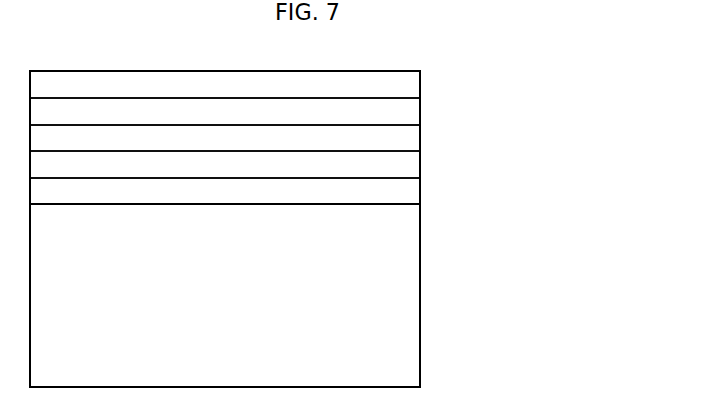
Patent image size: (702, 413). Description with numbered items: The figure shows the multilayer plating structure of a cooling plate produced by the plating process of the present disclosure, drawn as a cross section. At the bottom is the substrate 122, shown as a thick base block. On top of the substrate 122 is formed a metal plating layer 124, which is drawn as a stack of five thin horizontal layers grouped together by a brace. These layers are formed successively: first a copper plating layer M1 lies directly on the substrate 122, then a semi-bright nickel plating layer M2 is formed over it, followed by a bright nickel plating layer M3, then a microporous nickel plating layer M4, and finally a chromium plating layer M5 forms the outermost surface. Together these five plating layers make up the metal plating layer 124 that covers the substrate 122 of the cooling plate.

The substrate 122 is at (421, 250).
The metal plating layer 124 is at (309, 137).
The copper plating layer M1 is at (248, 191).
The semi-bright nickel plating layer M2 is at (421, 165).
The bright nickel plating layer M3 is at (421, 138).
The microporous nickel plating layer M4 is at (421, 112).
The chromium plating layer M5 is at (421, 85).